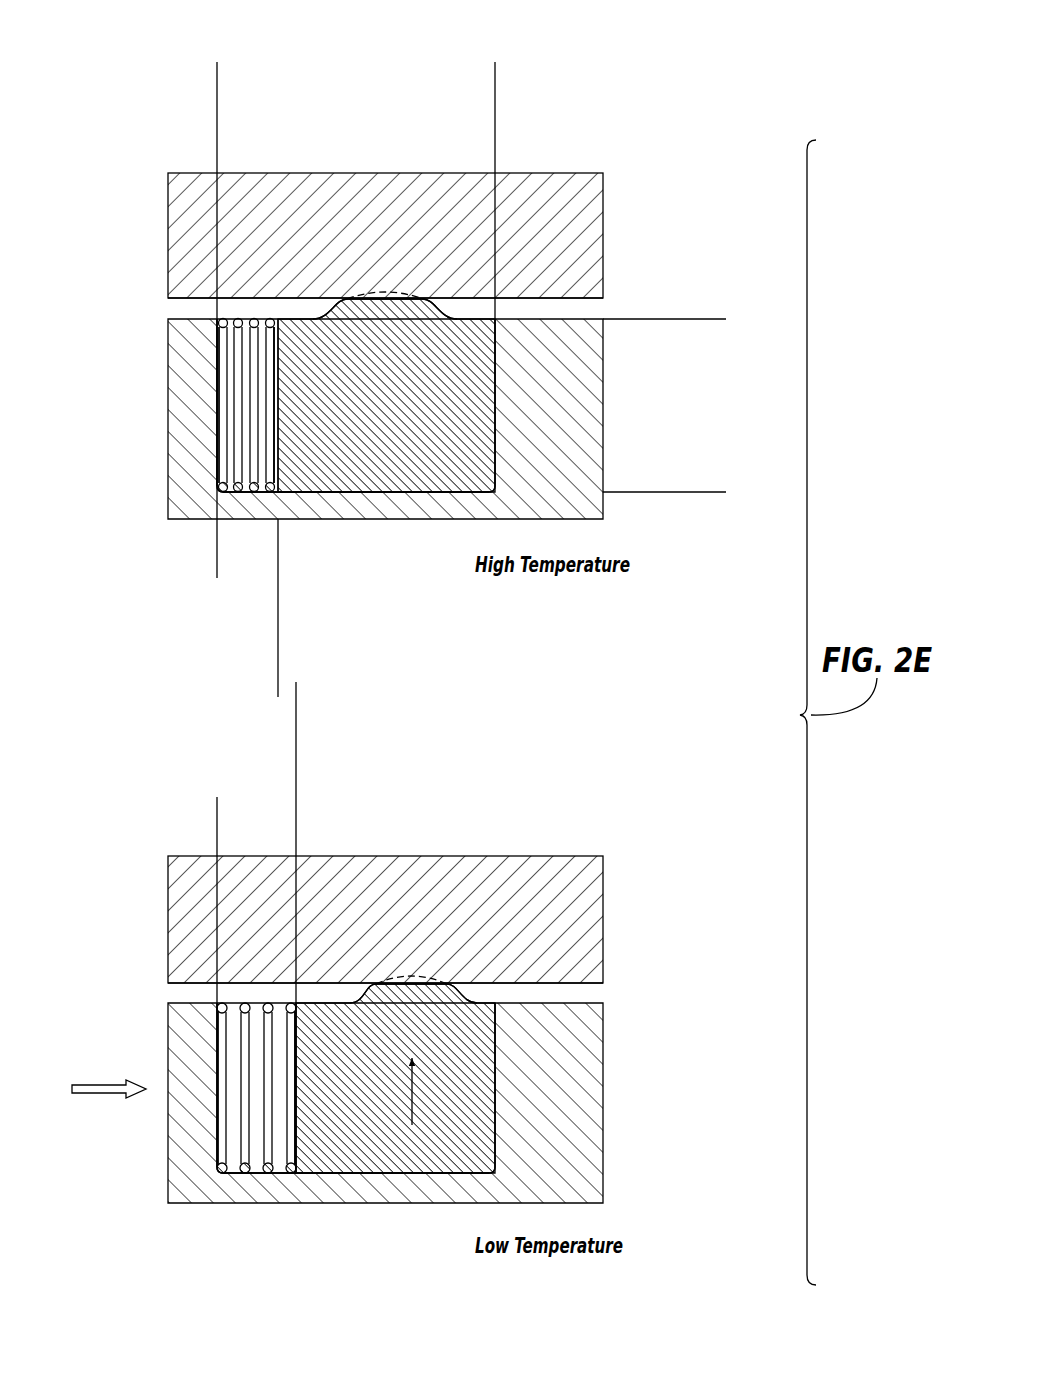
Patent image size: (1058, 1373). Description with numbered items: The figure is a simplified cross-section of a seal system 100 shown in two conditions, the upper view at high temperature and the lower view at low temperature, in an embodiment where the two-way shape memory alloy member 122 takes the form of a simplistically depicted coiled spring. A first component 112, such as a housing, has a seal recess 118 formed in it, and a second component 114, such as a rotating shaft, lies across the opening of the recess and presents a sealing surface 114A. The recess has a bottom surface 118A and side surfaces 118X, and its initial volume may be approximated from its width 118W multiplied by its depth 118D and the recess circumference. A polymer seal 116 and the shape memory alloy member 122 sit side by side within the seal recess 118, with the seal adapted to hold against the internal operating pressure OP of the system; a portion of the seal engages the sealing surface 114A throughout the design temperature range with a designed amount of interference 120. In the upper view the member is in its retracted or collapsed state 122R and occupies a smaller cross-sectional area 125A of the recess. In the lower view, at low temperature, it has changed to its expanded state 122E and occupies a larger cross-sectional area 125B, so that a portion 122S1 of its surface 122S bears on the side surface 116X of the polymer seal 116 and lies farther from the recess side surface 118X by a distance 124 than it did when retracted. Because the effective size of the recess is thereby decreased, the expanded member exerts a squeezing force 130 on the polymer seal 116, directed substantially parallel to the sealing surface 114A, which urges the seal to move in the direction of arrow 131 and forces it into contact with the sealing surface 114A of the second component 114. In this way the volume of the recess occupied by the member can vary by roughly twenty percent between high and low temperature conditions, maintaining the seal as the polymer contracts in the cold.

The system 100 is at (145, 192).
The first component 112 is at (597, 410).
The second component 114 is at (592, 213).
The sealing surface 114A is at (541, 300).
The polymer seal 116 is at (468, 369).
The side surface of the polymer seal 116X is at (279, 417).
The seal recess 118 is at (402, 494).
The bottom surface 118A is at (357, 494).
The depth of the seal recess 118D is at (716, 492).
The width of the seal recess 118W is at (217, 70).
The side surface 118X is at (216, 388).
The interference 120 is at (386, 338).
The two-way shape memory alloy member 122 is at (227, 410).
The retracted or collapsed shape or state 122R is at (240, 366).
The expanded shape or size 122E is at (240, 1040).
The surface of the TWSMA member 122S is at (276, 443).
The portion of the surface 122S1 is at (296, 1093).
The distance 124 is at (243, 688).
The smaller cross-sectional area 125A is at (278, 572).
The larger cross-sectional area 125B is at (296, 805).
The force 130 is at (90, 1098).
The arrow 131 is at (418, 1091).
The operating pressure OP is at (205, 311).